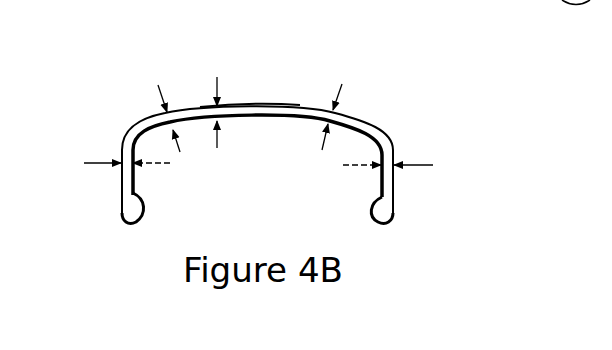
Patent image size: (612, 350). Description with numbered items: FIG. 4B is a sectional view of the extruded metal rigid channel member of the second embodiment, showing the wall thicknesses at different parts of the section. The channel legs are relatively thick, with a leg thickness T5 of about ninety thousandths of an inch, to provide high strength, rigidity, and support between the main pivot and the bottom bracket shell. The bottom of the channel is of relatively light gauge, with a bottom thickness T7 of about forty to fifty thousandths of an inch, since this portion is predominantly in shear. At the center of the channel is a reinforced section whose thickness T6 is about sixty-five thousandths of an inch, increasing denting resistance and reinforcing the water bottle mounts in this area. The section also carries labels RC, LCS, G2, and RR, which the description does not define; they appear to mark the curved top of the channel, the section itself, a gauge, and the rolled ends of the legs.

The radius of curvature of top surface RC is at (248, 107).
The leg cross section LCS is at (362, 120).
The second gauge thickness G2 is at (390, 142).
The channel leg thickness T5 is at (256, 168).
The reinforced section thickness T6 is at (215, 101).
The channel bottom thickness T7 is at (252, 106).
The rolled rim RR is at (133, 216).